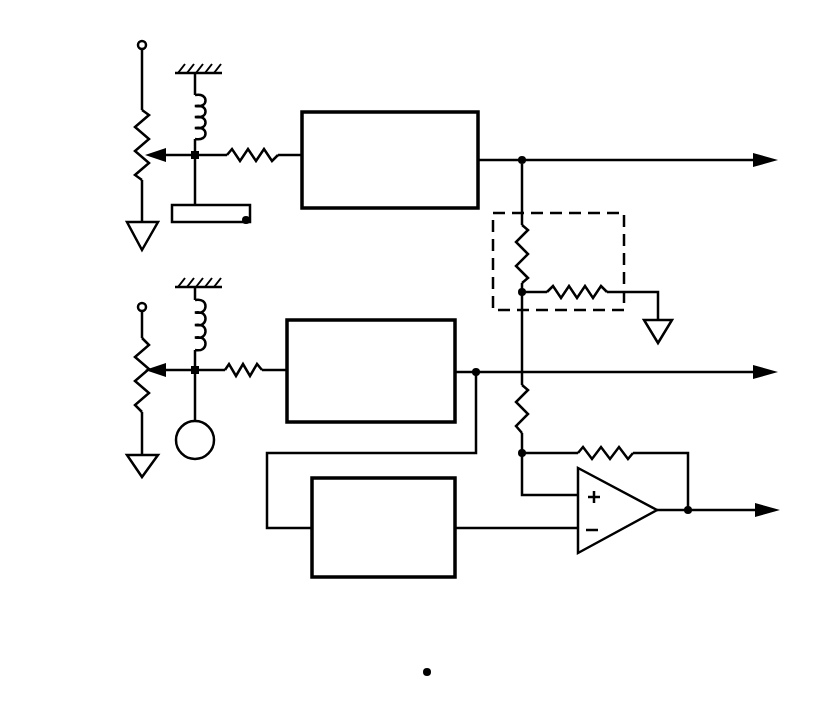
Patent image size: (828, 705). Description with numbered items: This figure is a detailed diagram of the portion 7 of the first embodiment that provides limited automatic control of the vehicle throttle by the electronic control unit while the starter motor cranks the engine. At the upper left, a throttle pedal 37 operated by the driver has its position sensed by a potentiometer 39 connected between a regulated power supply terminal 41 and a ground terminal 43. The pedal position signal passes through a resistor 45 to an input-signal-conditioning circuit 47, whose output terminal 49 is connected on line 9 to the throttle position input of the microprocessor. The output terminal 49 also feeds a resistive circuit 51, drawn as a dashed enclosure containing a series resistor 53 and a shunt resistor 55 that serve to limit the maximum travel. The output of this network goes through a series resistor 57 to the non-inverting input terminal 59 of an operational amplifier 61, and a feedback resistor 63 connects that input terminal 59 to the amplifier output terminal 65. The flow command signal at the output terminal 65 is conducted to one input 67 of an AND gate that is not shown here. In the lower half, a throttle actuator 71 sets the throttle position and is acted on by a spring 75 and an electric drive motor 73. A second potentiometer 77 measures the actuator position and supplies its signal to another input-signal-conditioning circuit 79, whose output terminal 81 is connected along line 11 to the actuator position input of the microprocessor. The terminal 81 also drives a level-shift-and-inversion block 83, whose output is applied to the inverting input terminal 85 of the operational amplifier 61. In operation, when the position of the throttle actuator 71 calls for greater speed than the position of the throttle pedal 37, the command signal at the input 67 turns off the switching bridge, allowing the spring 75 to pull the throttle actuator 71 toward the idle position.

The flow control circuit 7 is at (570, 136).
The line 9 is at (640, 160).
The line 11 is at (670, 372).
The throttle pedal 37 is at (200, 224).
The potentiometer 39 is at (133, 137).
The regulated power supply terminal 41 is at (148, 42).
The ground terminal 43 is at (140, 210).
The resistor 45 is at (253, 153).
The input-signal-conditioning circuit 47 is at (395, 112).
The output terminal 49 is at (483, 158).
The resistive circuit 51 is at (630, 262).
The series resistor 53 is at (528, 246).
The shunt resistor 55 is at (562, 284).
The series resistor 57 is at (528, 420).
The non-inverting input terminal 59 is at (578, 490).
The operational amplifier 61 is at (615, 536).
The feedback resistor 63 is at (610, 446).
The output terminal 65 is at (685, 508).
The input of the AND gate 67 is at (752, 510).
The throttle actuator 71 is at (205, 398).
The electric drive motor 73 is at (213, 458).
The spring 75 is at (200, 328).
The potentiometer 77 is at (136, 384).
The input-signal-conditioning circuit 79 is at (405, 320).
The output terminal 81 is at (460, 372).
The level-shift-and-inversion block 83 is at (312, 553).
The inverting input terminal 85 is at (578, 532).